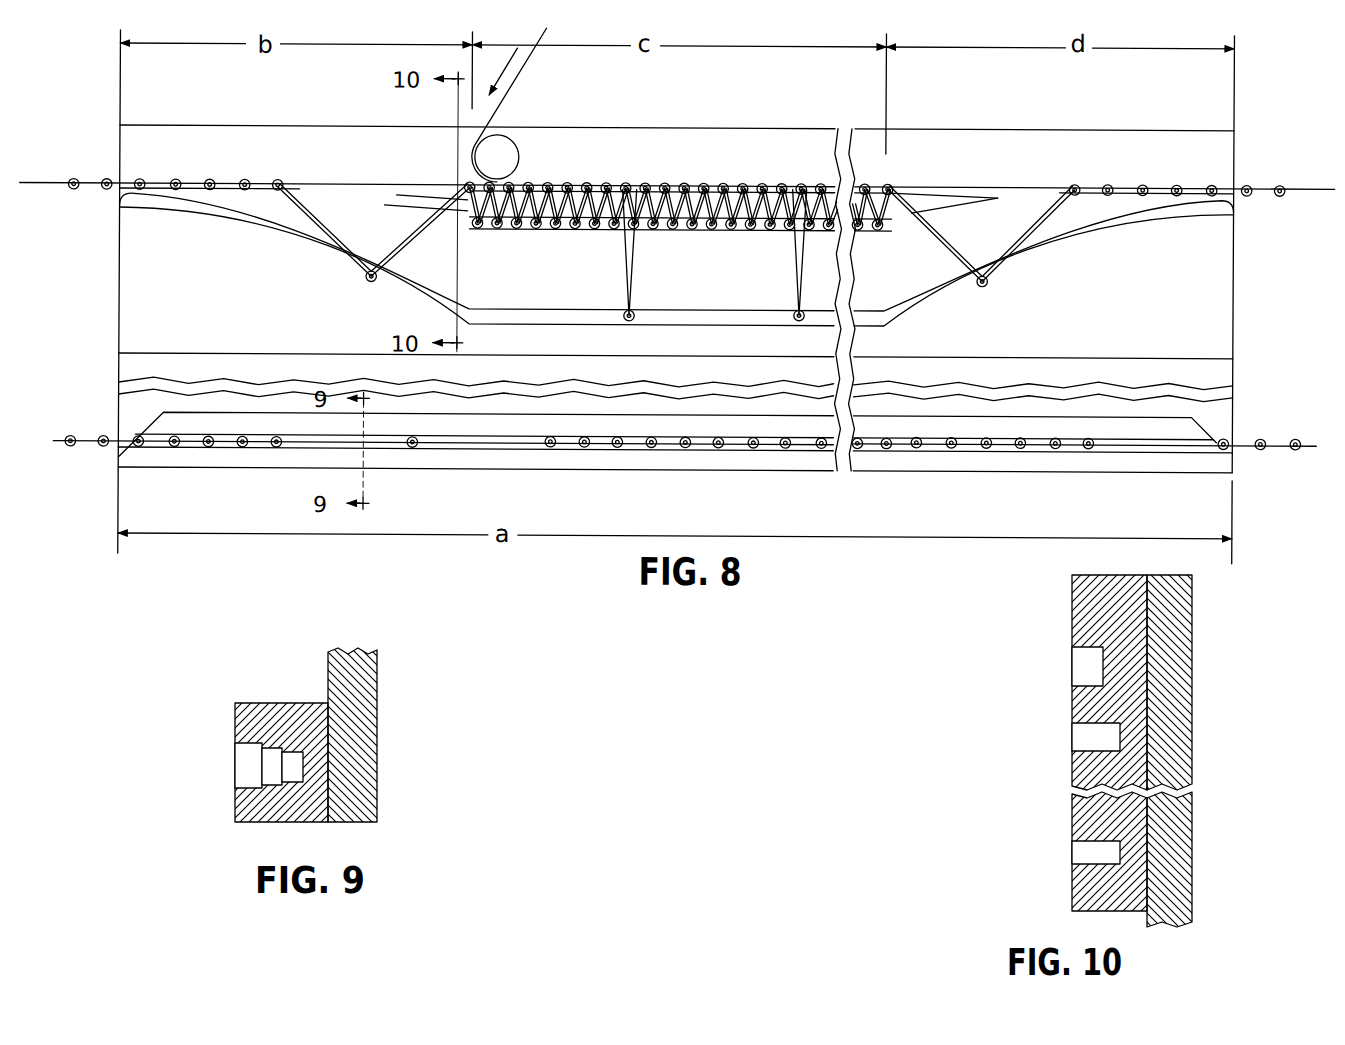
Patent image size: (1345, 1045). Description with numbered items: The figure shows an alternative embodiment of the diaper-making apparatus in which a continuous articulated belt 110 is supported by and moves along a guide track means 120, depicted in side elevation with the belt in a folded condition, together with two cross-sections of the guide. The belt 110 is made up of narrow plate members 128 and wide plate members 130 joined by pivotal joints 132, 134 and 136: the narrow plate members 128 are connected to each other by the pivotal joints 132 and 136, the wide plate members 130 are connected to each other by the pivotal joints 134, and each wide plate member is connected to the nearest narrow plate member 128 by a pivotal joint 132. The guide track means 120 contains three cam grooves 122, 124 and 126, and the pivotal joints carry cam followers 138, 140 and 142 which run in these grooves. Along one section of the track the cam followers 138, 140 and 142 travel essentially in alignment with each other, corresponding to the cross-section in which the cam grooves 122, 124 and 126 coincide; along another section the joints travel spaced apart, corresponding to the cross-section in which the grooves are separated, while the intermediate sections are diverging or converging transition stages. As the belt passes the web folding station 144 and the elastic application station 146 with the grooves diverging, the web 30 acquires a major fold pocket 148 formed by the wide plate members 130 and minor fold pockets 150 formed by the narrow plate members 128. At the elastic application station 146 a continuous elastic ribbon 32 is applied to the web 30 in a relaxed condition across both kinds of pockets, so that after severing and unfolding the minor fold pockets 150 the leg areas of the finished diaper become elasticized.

In FIG. 8, the web 30 is at (33, 182).
In FIG. 8, the elastic ribbon 32 is at (528, 55).
In FIG. 8, the continuous articulated belt 110 is at (1258, 174).
In FIG. 8, the guide track means 120 is at (200, 277).
In FIG. 9, the guide track means 120 is at (382, 701).
In FIG. 10, the guide track means 120 is at (1195, 648).
In FIG. 8, the cam groove 122 is at (955, 188).
In FIG. 9, the cam groove 122 is at (245, 757).
In FIG. 10, the cam groove 122 is at (1082, 662).
In FIG. 8, the cam groove 124 is at (977, 210).
In FIG. 9, the cam groove 124 is at (270, 762).
In FIG. 10, the cam groove 124 is at (1082, 735).
In FIG. 8, the cam groove 126 is at (1083, 223).
In FIG. 9, the cam groove 126 is at (292, 772).
In FIG. 10, the cam groove 126 is at (1082, 856).
In FIG. 8, the narrow plate member 128 is at (205, 182).
In FIG. 8, the wide plate member 130 is at (325, 232).
In FIG. 8, the pivotal joint 132 is at (737, 181).
In FIG. 8, the pivotal joint 134 is at (794, 315).
In FIG. 8, the pivotal joint 136 is at (537, 227).
In FIG. 8, the cam follower 138 is at (687, 446).
In FIG. 8, the cam follower 140 is at (414, 448).
In FIG. 8, the cam follower 142 is at (141, 447).
In FIG. 8, the web folding station 144 is at (455, 275).
In FIG. 8, the elastic application station 146 is at (567, 111).
In FIG. 8, the major fold pocket 148 is at (625, 231).
In FIG. 8, the minor fold pocket 150 is at (808, 181).